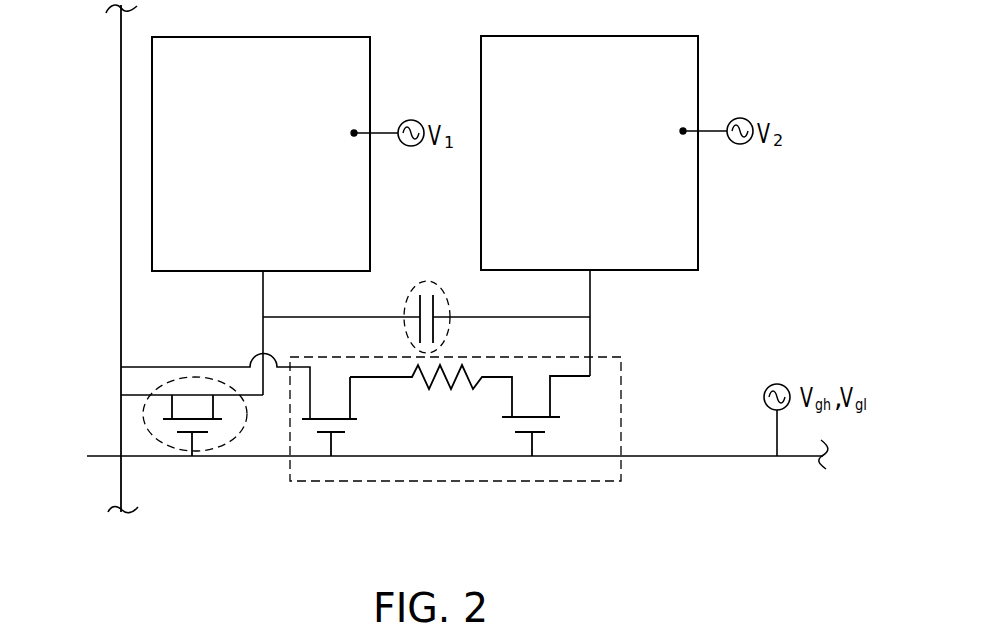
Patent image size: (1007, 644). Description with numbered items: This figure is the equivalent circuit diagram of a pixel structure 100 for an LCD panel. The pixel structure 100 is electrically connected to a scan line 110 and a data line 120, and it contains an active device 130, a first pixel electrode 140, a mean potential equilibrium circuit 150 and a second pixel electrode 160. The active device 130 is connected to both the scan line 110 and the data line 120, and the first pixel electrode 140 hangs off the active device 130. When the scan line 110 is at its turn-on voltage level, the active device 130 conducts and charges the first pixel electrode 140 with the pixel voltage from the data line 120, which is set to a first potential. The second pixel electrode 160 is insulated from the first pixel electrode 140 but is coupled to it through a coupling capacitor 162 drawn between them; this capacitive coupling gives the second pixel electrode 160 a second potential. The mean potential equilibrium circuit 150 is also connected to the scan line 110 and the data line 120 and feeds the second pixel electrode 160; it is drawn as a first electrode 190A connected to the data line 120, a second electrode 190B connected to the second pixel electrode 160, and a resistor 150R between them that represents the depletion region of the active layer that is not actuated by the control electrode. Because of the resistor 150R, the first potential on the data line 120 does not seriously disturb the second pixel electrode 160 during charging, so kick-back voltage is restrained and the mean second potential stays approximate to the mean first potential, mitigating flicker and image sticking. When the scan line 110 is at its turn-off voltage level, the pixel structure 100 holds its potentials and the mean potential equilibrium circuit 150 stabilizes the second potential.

The pixel structure 100 is at (914, 529).
The scan line 110 is at (707, 457).
The data line 120 is at (120, 77).
The active device 130 is at (218, 450).
The first pixel electrode 140 is at (261, 216).
The mean potential equilibrium circuit 150 is at (621, 375).
The resistor 150R is at (431, 395).
The second pixel electrode 160 is at (589, 206).
The coupling capacitor 162 is at (425, 278).
The first electrode 190A is at (310, 400).
The second electrode 190B is at (550, 395).